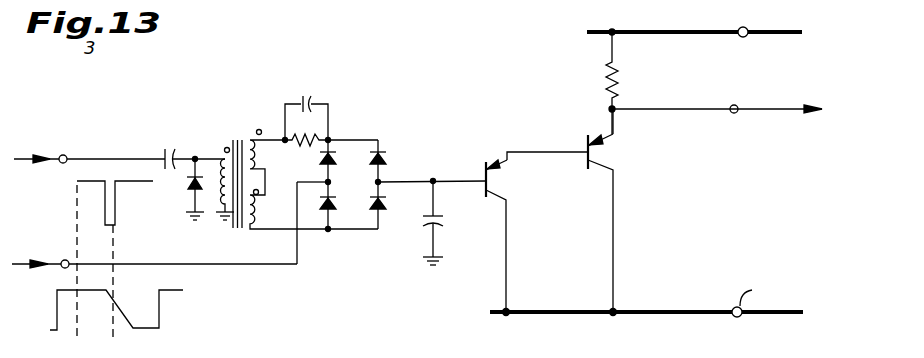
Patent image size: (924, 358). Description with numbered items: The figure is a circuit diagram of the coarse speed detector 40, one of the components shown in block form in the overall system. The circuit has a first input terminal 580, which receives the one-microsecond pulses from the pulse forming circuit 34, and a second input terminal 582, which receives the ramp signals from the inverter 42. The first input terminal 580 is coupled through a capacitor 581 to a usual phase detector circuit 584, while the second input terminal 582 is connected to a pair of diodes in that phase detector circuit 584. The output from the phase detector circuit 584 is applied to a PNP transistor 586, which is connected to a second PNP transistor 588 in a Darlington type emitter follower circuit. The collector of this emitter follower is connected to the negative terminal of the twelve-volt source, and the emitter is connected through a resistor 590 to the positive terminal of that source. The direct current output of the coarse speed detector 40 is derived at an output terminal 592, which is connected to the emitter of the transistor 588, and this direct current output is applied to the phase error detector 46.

The pulse forming circuit 34 is at (36, 156).
The coarse speed detector 40 is at (417, 181).
The inverter 42 is at (37, 272).
The phase error detector 46 is at (808, 116).
The first input terminal 580 is at (68, 157).
The capacitor 581 is at (174, 151).
The second input terminal 582 is at (68, 262).
The phase detector circuit 584 is at (355, 158).
The PNP transistor 586 is at (482, 167).
The PNP transistor 588 is at (585, 164).
The resistor 590 is at (617, 84).
The output terminal 592 is at (731, 113).